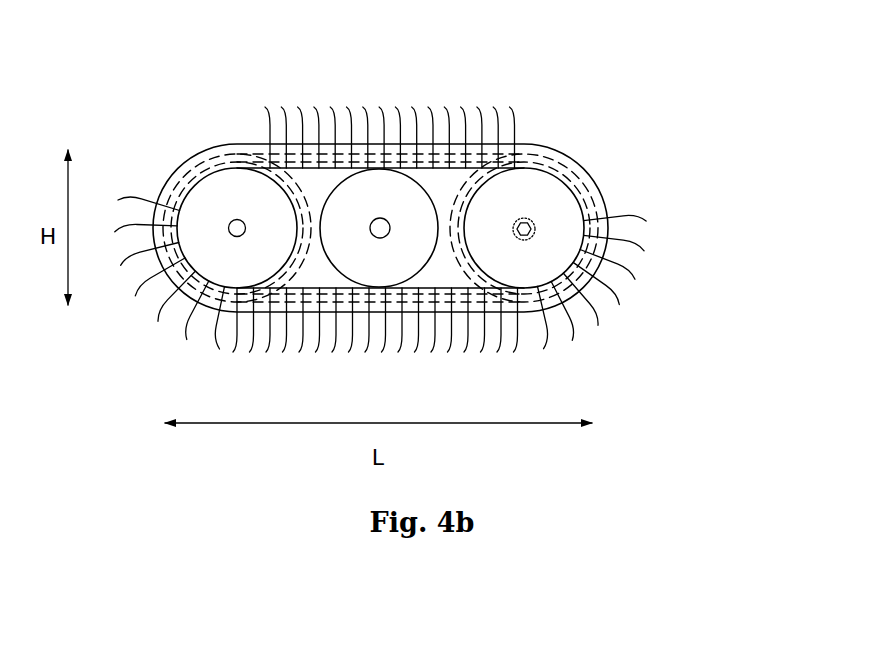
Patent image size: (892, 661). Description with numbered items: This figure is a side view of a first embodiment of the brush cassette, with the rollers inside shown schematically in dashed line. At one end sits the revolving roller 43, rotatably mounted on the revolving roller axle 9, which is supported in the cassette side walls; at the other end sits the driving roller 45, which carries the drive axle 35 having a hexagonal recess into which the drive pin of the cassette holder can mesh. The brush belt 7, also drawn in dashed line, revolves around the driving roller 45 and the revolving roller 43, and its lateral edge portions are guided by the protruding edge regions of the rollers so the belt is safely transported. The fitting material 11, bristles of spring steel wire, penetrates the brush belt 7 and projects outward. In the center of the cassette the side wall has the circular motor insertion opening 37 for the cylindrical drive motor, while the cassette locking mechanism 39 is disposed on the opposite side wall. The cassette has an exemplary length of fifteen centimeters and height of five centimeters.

The brush belt 7 is at (318, 157).
The revolving roller axle 9 is at (228, 238).
The fitting material 11 is at (650, 211).
The drive axle 35 is at (533, 245).
The motor insertion opening 37 is at (365, 272).
The cassette locking mechanism 39 is at (390, 246).
The revolving roller 43 is at (207, 214).
The driving roller 45 is at (556, 197).